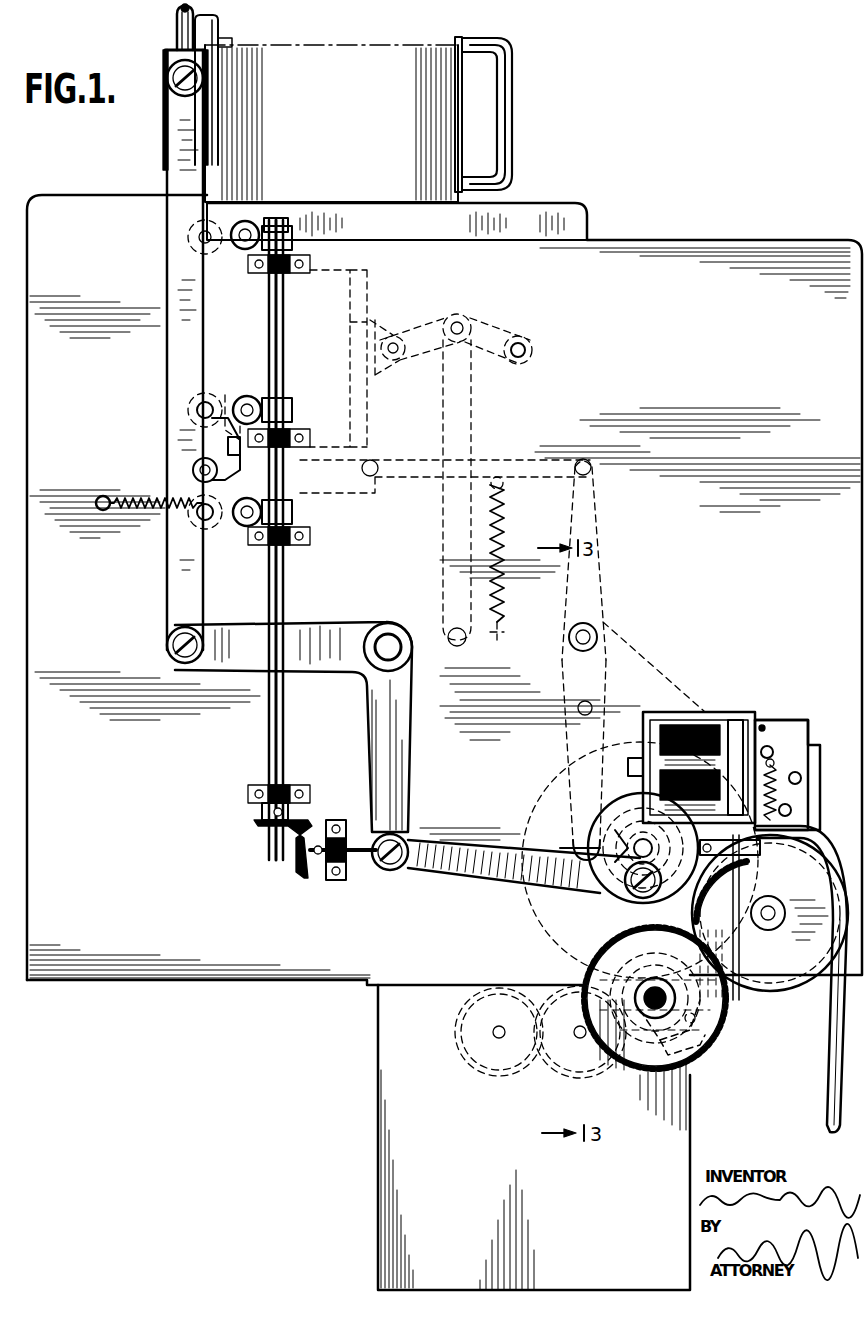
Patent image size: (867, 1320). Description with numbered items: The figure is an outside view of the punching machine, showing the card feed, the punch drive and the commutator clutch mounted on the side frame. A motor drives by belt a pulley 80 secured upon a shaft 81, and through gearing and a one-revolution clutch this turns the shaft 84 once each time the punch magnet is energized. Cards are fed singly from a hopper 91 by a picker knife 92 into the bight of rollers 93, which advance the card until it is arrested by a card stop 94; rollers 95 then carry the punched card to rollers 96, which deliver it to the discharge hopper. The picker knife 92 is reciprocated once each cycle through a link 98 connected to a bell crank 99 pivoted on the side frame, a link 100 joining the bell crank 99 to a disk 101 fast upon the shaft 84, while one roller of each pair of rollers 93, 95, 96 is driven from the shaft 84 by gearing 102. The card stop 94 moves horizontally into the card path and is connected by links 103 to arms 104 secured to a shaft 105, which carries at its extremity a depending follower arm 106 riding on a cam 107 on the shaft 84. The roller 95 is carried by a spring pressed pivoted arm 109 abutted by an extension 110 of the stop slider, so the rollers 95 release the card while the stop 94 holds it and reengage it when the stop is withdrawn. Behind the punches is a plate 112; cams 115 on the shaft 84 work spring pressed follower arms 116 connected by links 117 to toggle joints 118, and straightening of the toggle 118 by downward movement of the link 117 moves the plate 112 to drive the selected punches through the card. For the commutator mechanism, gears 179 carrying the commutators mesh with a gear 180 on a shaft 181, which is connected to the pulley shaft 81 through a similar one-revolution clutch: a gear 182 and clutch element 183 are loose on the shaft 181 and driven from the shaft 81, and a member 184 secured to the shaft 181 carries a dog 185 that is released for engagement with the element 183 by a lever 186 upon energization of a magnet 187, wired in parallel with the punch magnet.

The pulley 80 is at (795, 988).
The shaft 81 is at (774, 909).
The shaft 84 is at (632, 868).
The hopper 91 is at (310, 76).
The picker knife 92 is at (225, 48).
The rollers 93 is at (188, 237).
The card stop 94 is at (226, 402).
The rollers 95 is at (190, 404).
The rollers 96 is at (190, 520).
The link 98 is at (185, 311).
The bell crank 99 is at (337, 656).
The link 100 is at (497, 878).
The disk 101 is at (625, 808).
The gearing 102 is at (252, 400).
The links 103 is at (490, 460).
The arms 104 is at (596, 520).
The shaft 105 is at (592, 632).
The follower arm 106 is at (565, 740).
The cam 107 is at (600, 805).
The spring pressed pivoted arm 109 is at (226, 440).
The extension 110 is at (196, 480).
The plate 112 is at (350, 318).
The cams 115 is at (560, 932).
The follower arms 116 is at (648, 660).
The links 117 is at (443, 557).
The toggle joints 118 is at (457, 314).
The gears 179 is at (520, 1075).
The gear 180 is at (660, 990).
The shaft 181 is at (648, 996).
The gear 182 is at (640, 1052).
The clutch element 183 is at (656, 1085).
The member 184 is at (708, 1025).
The dog 185 is at (700, 1042).
The lever 186 is at (740, 985).
The magnet 187 is at (700, 745).